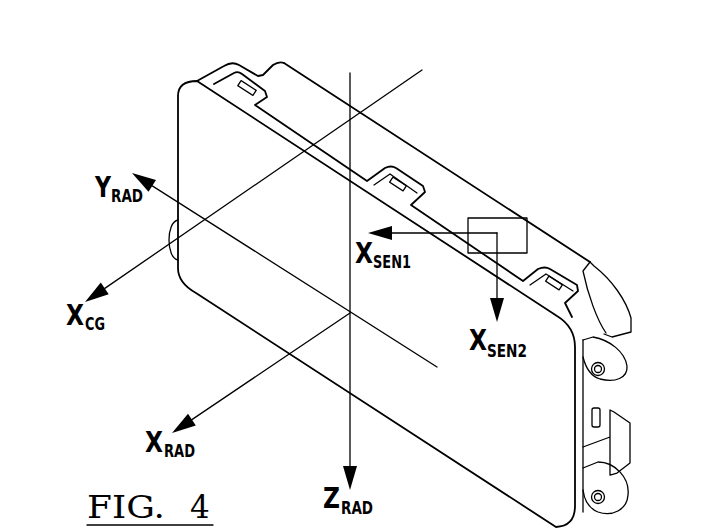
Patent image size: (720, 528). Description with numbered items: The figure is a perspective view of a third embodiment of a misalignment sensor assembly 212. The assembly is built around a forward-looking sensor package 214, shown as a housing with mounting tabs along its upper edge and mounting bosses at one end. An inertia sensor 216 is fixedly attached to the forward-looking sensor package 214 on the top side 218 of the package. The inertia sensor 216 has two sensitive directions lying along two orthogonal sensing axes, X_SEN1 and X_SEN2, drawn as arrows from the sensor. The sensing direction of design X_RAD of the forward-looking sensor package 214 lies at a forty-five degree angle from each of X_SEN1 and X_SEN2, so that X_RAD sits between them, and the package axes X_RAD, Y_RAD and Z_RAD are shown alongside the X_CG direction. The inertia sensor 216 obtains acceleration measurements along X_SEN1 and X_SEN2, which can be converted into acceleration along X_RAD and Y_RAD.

The misalignment sensor assembly 212 is at (122, 121).
The forward-looking sensor package 214 is at (222, 143).
The inertia sensor 216 is at (514, 232).
The top side 218 is at (311, 107).